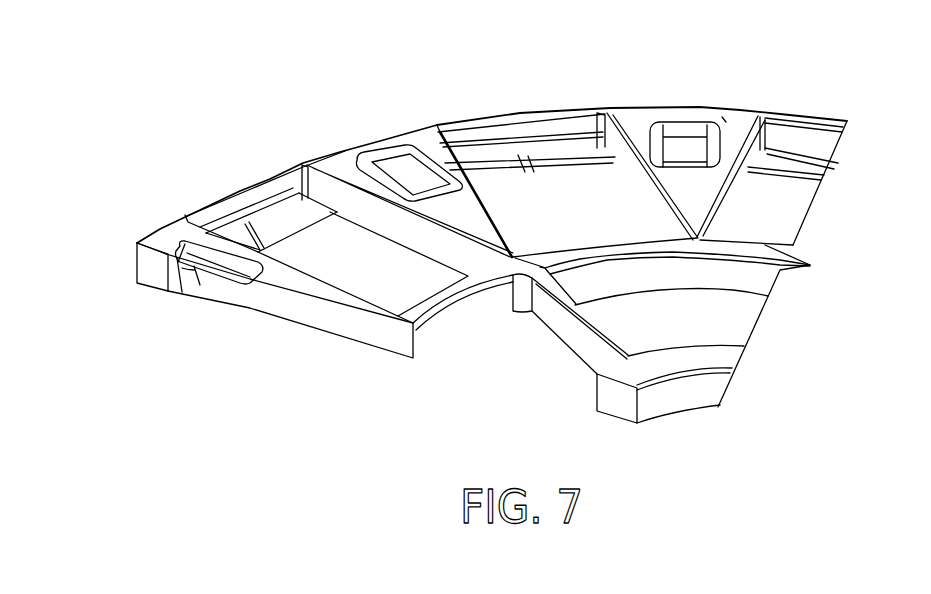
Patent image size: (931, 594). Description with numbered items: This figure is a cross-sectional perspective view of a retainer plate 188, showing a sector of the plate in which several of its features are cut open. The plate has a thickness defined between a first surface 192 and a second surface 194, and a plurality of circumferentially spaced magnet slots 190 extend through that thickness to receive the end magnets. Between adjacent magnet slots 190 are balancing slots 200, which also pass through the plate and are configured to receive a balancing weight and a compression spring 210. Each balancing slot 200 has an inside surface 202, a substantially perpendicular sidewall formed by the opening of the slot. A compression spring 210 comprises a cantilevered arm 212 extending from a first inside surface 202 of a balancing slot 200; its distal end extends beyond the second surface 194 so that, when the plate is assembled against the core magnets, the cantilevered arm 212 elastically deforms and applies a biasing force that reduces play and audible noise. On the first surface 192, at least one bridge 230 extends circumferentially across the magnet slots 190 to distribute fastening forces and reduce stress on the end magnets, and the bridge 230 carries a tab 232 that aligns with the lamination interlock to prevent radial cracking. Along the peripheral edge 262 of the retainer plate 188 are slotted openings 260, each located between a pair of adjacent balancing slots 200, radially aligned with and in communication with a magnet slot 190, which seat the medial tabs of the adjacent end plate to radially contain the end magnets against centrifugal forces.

The retainer plate 188 is at (447, 221).
The magnet slot 190 is at (394, 280).
The first surface 192 is at (287, 323).
The second surface 194 is at (330, 162).
The balancing slot 200 is at (138, 243).
The inside surface 202 is at (247, 297).
The compression spring 210 is at (203, 285).
The cantilevered arm 212 is at (180, 286).
The bridge 230 is at (273, 212).
The tab 232 is at (213, 228).
The slotted opening 260 is at (250, 205).
The peripheral edge 262 is at (137, 266).